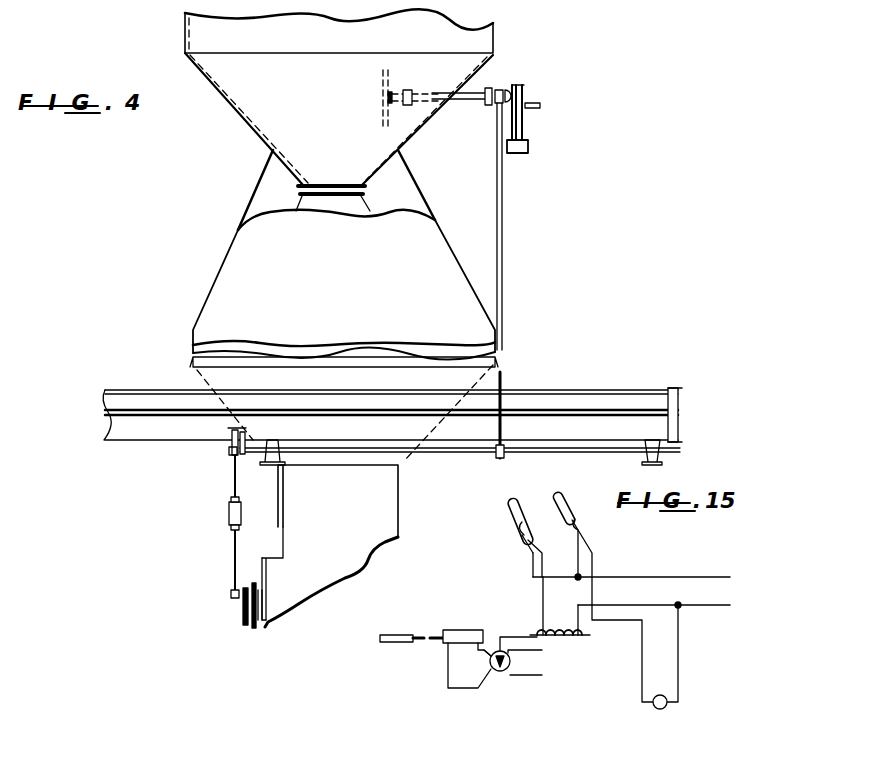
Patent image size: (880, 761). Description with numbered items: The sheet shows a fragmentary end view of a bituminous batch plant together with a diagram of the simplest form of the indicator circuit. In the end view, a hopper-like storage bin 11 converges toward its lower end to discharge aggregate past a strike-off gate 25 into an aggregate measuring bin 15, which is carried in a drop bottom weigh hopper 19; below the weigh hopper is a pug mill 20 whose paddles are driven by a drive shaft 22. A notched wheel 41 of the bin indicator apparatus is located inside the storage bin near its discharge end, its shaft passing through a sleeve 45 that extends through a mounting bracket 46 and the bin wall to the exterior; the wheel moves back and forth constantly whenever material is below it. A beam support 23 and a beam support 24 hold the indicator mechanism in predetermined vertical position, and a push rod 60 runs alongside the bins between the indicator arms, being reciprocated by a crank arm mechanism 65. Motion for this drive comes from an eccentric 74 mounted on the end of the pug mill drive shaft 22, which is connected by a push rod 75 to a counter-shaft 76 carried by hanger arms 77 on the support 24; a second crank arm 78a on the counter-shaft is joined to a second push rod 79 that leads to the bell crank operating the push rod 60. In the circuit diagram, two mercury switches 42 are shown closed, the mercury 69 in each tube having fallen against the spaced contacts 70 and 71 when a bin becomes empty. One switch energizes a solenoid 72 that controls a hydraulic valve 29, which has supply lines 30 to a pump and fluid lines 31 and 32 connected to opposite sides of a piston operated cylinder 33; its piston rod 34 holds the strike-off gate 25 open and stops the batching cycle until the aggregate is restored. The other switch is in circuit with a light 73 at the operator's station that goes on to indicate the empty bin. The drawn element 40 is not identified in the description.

In FIG. 4, the storage bin 11 is at (492, 40).
In FIG. 4, the mounting bracket 46 is at (452, 80).
In FIG. 4, the agitator 40 is at (378, 98).
In FIG. 4, the notched wheel 41 is at (390, 87).
In FIG. 4, the sleeve 45 is at (470, 95).
In FIG. 4, the beam support 23 is at (530, 106).
In FIG. 4, the push rod 60 is at (515, 153).
In FIG. 4, the second push rod 79 is at (502, 243).
In FIG. 4, the crank arm mechanism 65 is at (516, 285).
In FIG. 4, the strike-off gate 25 is at (362, 189).
In FIG. 15, the strike-off gate 25 is at (396, 636).
In FIG. 4, the aggregate measuring bin 15 is at (305, 202).
In FIG. 4, the drop bottom weigh hopper 19 is at (222, 278).
In FIG. 4, the beam support 24 is at (680, 395).
In FIG. 4, the hanger arm 77 is at (282, 466).
In FIG. 4, the counter-shaft 76 is at (555, 450).
In FIG. 4, the second crank arm 78a is at (499, 458).
In FIG. 4, the pug mill 20 is at (398, 520).
In FIG. 4, the push rod 75 is at (235, 546).
In FIG. 4, the eccentric 74 is at (243, 607).
In FIG. 4, the drive shaft 22 is at (258, 620).
In FIG. 15, the mercury 69 is at (528, 506).
In FIG. 15, the mercury switch 42 is at (513, 512).
In FIG. 15, the contact 70 is at (526, 530).
In FIG. 15, the contact 71 is at (530, 555).
In FIG. 15, the piston rod 34 is at (437, 636).
In FIG. 15, the piston operated cylinder 33 is at (461, 631).
In FIG. 15, the fluid line 31 is at (487, 655).
In FIG. 15, the fluid line 32 is at (456, 689).
In FIG. 15, the hydraulic valve 29 is at (500, 672).
In FIG. 15, the supply line 30 is at (540, 676).
In FIG. 15, the solenoid 72 is at (560, 640).
In FIG. 15, the light 73 is at (660, 709).